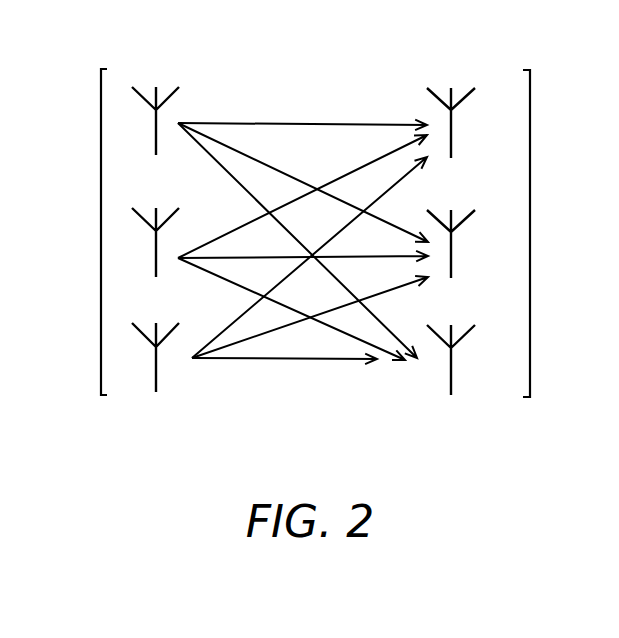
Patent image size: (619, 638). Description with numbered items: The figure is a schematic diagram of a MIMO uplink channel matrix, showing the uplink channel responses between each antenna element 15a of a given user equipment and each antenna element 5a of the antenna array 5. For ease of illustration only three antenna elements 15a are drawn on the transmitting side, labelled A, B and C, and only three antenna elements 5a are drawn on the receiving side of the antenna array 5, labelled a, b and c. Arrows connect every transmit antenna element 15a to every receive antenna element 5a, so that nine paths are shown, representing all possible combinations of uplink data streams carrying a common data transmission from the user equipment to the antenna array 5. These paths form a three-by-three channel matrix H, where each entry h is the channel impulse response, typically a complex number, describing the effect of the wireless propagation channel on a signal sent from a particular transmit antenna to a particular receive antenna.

The antenna element 15a is at (101, 232).
The antenna array 5 is at (441, 57).
The antenna element 5a is at (530, 233).